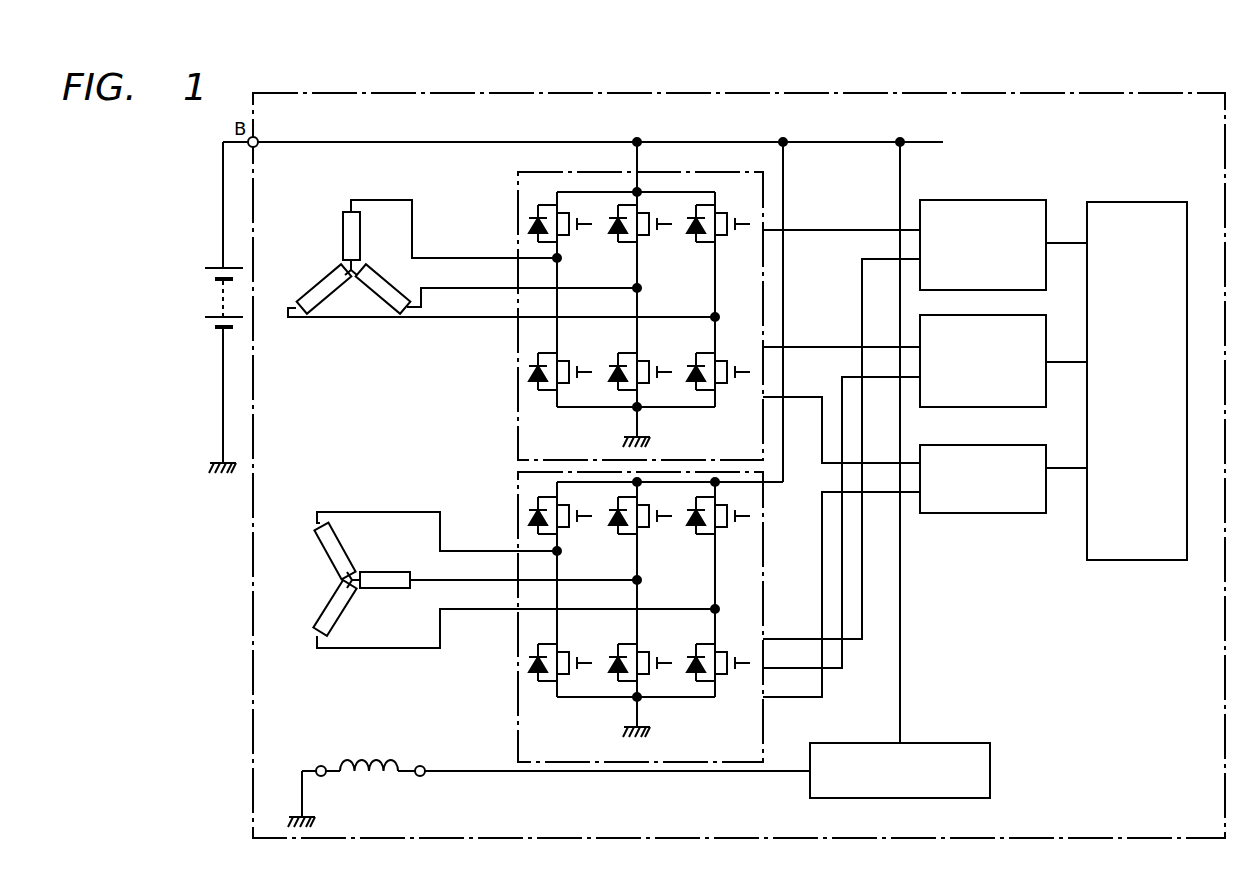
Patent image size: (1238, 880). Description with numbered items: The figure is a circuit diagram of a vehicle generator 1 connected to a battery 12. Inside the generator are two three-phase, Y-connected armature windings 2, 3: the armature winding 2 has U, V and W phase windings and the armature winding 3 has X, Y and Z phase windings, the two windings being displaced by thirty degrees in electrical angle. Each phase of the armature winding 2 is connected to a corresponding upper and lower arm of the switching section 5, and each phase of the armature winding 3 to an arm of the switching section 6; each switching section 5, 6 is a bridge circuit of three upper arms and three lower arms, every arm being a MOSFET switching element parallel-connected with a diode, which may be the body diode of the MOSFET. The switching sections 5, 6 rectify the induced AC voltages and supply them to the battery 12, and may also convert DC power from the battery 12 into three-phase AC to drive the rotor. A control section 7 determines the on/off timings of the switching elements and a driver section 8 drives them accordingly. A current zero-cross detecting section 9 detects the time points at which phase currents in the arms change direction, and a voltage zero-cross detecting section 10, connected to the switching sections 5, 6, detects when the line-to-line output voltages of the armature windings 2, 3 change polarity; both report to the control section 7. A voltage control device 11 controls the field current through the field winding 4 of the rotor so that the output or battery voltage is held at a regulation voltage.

The vehicle generator 1 is at (1145, 93).
The armature winding 2 is at (323, 250).
The armature winding 3 is at (328, 575).
The field winding 4 is at (368, 756).
The switching section 5 is at (517, 230).
The switching section 6 is at (517, 509).
The control section 7 is at (1117, 202).
The driver section 8 is at (1000, 445).
The current zero-cross detecting section 9 is at (1005, 317).
The voltage zero-cross detecting section 10 is at (1008, 200).
The voltage control device 11 is at (965, 743).
The battery 12 is at (214, 258).